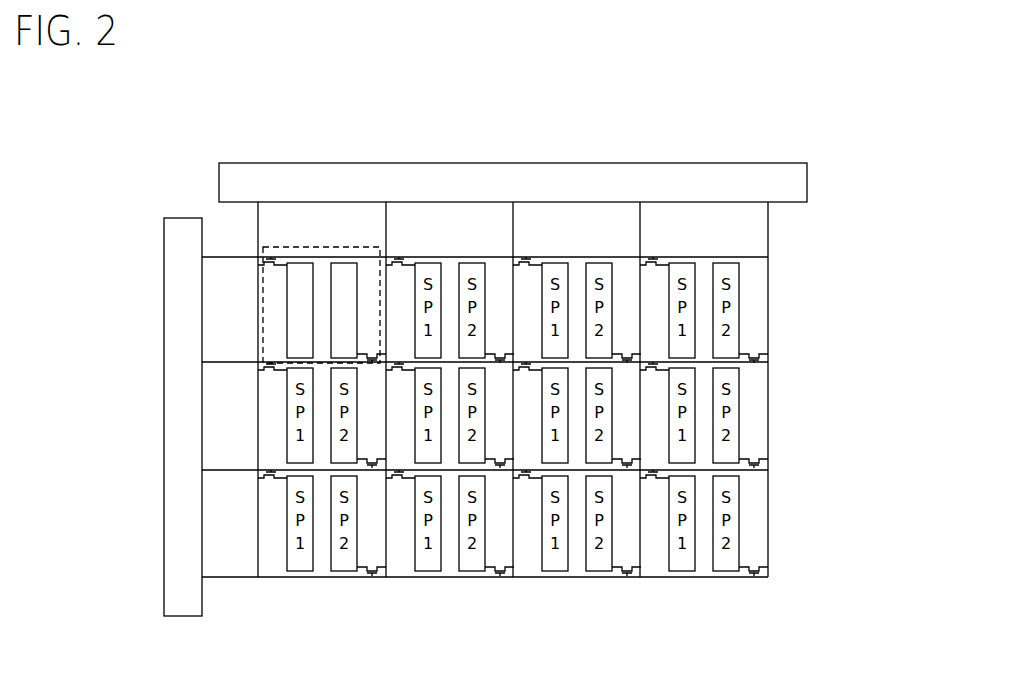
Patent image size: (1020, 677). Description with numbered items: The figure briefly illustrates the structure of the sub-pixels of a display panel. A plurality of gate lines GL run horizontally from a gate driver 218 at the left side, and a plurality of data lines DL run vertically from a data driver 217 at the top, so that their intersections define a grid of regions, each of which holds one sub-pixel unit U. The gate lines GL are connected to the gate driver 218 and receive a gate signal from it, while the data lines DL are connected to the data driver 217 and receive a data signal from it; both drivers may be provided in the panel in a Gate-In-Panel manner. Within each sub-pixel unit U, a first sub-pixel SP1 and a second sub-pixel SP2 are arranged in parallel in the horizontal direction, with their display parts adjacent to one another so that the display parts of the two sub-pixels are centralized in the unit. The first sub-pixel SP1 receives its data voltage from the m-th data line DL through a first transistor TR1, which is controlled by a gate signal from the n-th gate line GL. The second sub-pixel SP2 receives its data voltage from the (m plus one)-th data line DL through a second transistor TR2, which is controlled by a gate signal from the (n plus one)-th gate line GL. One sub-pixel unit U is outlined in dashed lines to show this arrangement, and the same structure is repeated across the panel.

The data driver 217 is at (807, 182).
The gate driver 218 is at (183, 218).
The gate line GL is at (485, 417).
The data line DL is at (529, 389).
The sub-pixel unit U is at (335, 247).
The first transistor TR1 is at (268, 262).
The second transistor TR2 is at (372, 357).
The first sub-pixel SP1 is at (300, 310).
The second sub-pixel SP2 is at (344, 310).